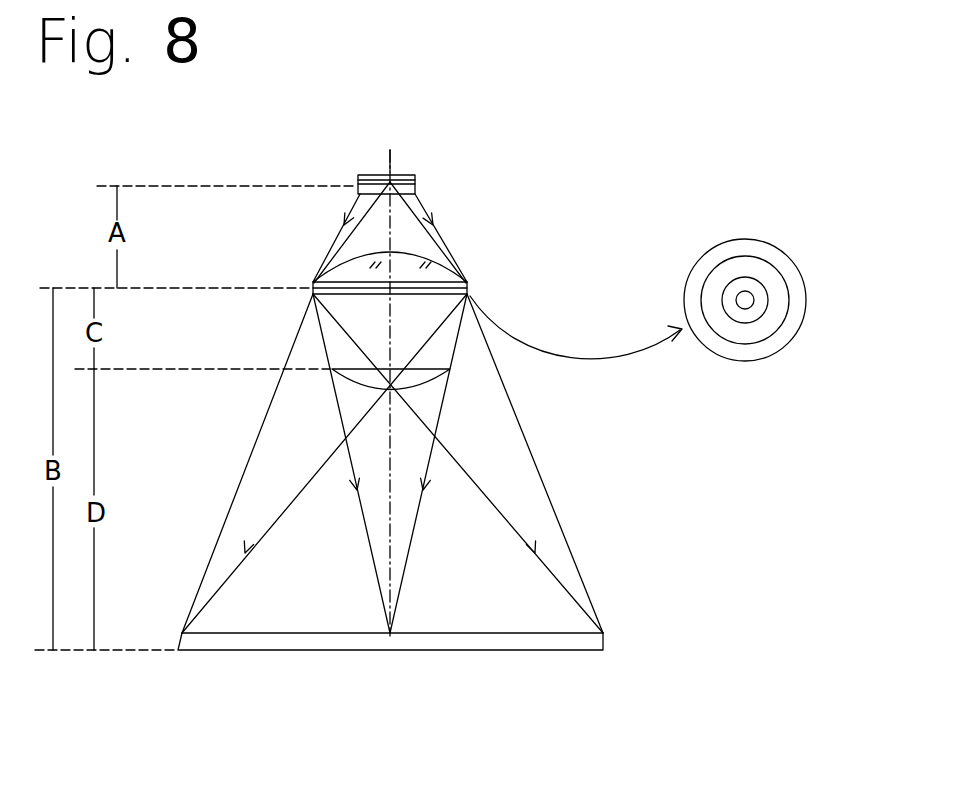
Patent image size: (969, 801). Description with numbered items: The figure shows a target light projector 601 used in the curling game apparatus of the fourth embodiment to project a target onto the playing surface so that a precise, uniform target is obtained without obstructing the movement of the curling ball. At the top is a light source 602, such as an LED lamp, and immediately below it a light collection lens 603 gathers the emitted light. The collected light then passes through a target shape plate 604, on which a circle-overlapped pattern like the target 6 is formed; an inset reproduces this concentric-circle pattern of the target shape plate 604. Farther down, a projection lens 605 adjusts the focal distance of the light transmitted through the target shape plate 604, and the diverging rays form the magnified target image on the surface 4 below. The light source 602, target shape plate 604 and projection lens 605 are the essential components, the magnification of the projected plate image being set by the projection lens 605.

The target light projector 601 is at (460, 128).
The light source 602 is at (418, 182).
The light collection lens 603 is at (440, 264).
The target shape plate 604 is at (470, 283).
The projection lens 605 is at (517, 428).
The target 6 is at (312, 616).
The substrate 4 is at (478, 650).